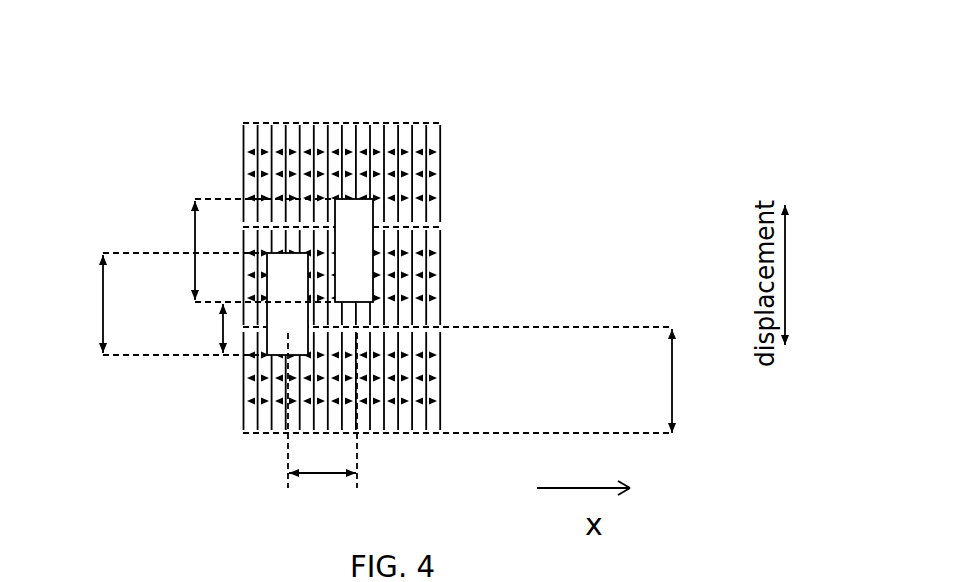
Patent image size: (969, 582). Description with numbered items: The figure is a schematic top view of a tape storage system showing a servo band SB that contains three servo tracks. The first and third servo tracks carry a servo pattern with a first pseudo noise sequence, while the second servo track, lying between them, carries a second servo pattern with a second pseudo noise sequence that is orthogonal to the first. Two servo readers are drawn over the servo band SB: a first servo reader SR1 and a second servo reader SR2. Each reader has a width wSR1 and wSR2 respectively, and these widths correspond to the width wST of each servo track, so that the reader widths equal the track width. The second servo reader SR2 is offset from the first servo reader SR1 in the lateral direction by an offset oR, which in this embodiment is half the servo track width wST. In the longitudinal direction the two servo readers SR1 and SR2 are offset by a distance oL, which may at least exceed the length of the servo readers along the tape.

The servo band SB is at (418, 117).
The first servo reader SR1 is at (281, 253).
The second servo reader SR2 is at (362, 218).
The width of first servo reader wSR1 is at (144, 304).
The width of second servo reader wSR2 is at (220, 250).
The lateral offset oR is at (199, 328).
The servo track width wST is at (711, 381).
The longitudinal offset oL is at (322, 436).